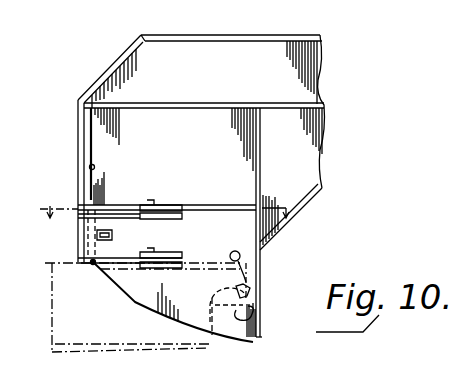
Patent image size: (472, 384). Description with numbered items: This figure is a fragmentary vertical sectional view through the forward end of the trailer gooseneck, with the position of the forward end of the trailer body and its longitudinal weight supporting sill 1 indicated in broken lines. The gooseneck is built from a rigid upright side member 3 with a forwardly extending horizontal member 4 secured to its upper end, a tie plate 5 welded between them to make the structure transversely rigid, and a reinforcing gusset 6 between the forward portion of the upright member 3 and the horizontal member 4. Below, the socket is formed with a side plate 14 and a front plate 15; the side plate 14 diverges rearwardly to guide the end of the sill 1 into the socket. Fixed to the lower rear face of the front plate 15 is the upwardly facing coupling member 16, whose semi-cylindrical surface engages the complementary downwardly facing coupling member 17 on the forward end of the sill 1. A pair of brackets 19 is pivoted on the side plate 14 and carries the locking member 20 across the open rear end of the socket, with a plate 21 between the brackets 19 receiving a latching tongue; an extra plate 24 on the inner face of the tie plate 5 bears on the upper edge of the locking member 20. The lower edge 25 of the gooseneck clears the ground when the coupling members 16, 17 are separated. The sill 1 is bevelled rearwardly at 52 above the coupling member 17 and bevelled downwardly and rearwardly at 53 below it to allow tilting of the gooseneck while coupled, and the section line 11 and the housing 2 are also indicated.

The longitudinal weight supporting girder or sill 1 is at (117, 355).
The housing 2 is at (468, 245).
The rigid upright side member 3 is at (182, 167).
The forwardly extending horizontal member 4 is at (314, 80).
The tie plate 5 is at (115, 63).
The reinforcing gusset 6 is at (318, 130).
The section line 11- 11 is at (170, 203).
The side plate 14 is at (145, 298).
The front plate 15 is at (261, 315).
The upwardly facing coupling member 16 is at (276, 302).
The downwardly facing coupling member 17 is at (259, 289).
The bracket 19 is at (110, 213).
The locking member or plate 20 is at (85, 248).
The plate 21 is at (122, 232).
The extra plate 24 is at (89, 167).
The lower edge of the gooseneck 25 is at (256, 339).
The rearward bevel of sill forward end 52 is at (253, 279).
The downward and rearward bevel of sill forward face 53 is at (214, 338).